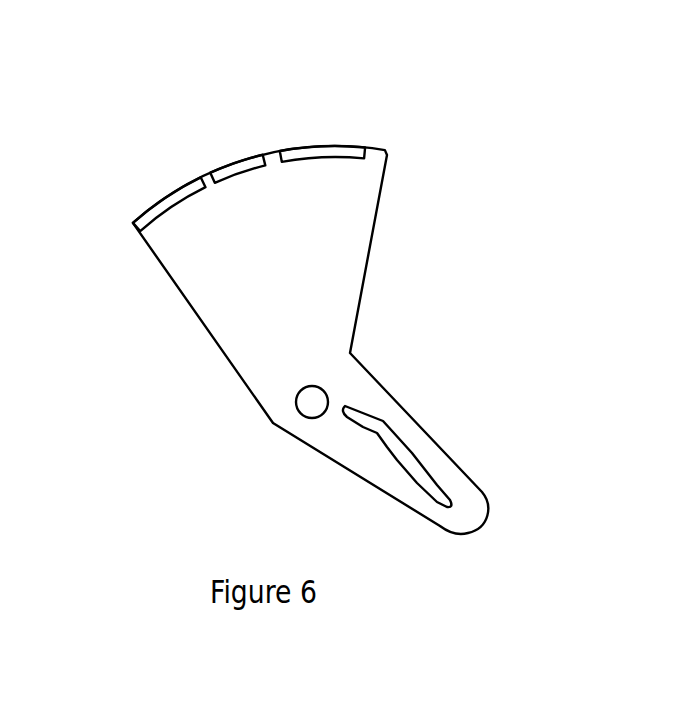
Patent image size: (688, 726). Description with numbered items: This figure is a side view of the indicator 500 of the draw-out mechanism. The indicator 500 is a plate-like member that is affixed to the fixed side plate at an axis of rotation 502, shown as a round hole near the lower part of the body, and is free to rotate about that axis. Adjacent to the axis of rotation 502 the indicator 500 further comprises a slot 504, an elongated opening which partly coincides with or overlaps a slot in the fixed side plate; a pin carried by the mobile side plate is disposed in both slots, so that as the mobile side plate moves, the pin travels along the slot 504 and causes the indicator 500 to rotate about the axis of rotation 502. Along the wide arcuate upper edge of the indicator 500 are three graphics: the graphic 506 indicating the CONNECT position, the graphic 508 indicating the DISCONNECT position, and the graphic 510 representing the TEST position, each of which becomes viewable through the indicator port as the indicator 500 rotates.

The indicator 500 is at (210, 337).
The axis of rotation 502 is at (297, 410).
The slot 504 is at (393, 440).
The graphic 506 is at (165, 187).
The graphic 508 is at (237, 155).
The graphic 510 is at (315, 145).